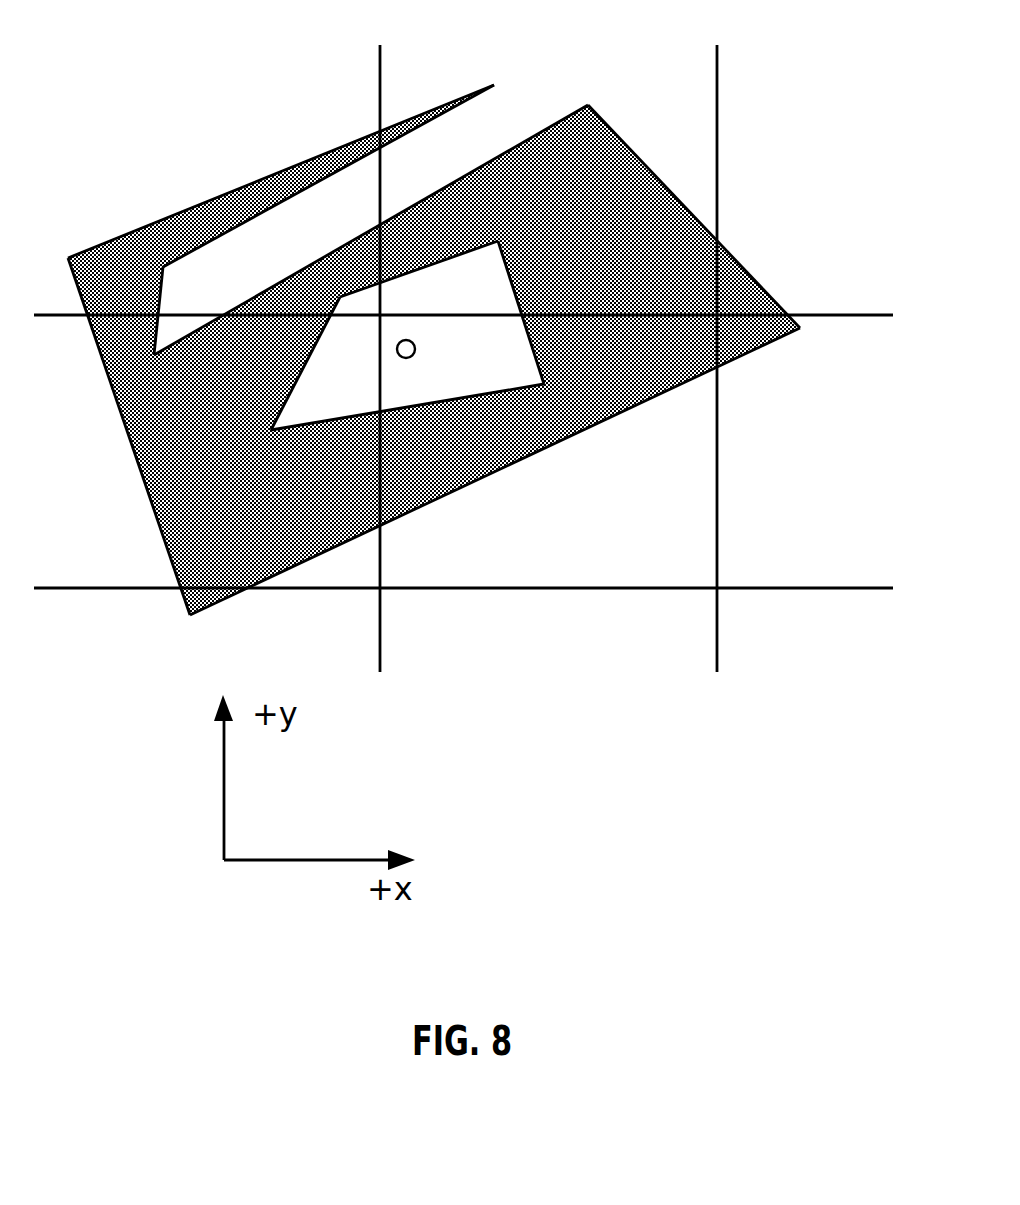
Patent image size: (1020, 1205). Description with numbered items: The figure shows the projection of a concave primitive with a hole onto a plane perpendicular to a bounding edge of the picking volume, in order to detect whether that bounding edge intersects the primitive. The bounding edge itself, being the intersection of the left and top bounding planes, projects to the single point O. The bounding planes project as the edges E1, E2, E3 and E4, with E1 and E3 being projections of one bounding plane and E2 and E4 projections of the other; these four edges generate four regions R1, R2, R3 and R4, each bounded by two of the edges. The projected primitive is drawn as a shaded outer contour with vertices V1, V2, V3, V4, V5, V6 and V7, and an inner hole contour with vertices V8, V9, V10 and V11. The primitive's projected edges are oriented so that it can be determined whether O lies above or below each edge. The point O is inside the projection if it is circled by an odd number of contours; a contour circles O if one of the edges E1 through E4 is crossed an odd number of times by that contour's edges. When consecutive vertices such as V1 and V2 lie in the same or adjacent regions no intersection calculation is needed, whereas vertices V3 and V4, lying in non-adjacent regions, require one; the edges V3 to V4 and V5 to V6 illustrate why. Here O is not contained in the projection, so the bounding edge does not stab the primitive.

The vertex V1 is at (302, 161).
The vertex V2 is at (328, 191).
The vertex V3 is at (173, 331).
The vertex V4 is at (378, 230).
The vertex V5 is at (703, 216).
The vertex V6 is at (487, 496).
The vertex V7 is at (122, 414).
The vertex V8 is at (289, 371).
The vertex V9 is at (430, 389).
The vertex V10 is at (530, 304).
The vertex V11 is at (395, 278).
The edge E1 is at (789, 358).
The edge E2 is at (463, 181).
The edge E3 is at (212, 358).
The edge E4 is at (463, 633).
The region R1 is at (768, 180).
The region R2 is at (207, 180).
The region R3 is at (207, 597).
The region R4 is at (769, 596).
The point O is at (406, 349).